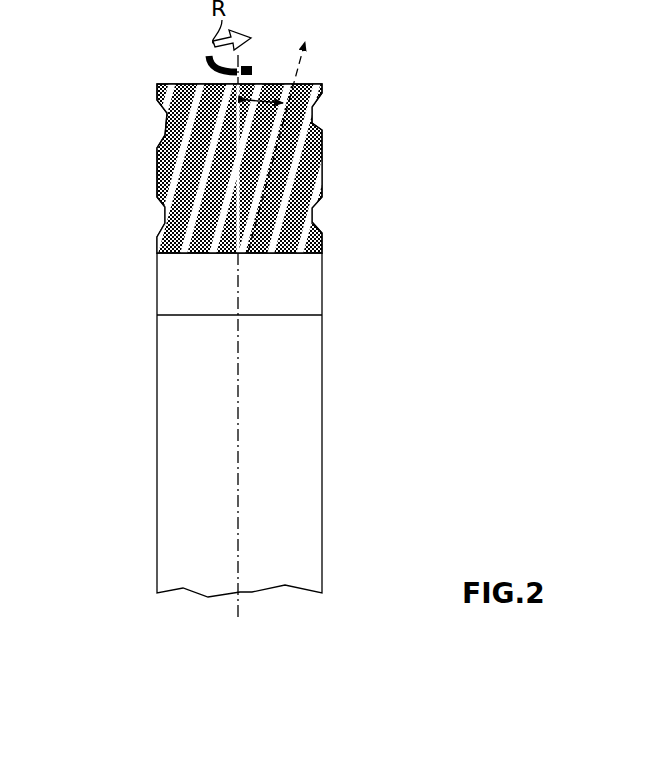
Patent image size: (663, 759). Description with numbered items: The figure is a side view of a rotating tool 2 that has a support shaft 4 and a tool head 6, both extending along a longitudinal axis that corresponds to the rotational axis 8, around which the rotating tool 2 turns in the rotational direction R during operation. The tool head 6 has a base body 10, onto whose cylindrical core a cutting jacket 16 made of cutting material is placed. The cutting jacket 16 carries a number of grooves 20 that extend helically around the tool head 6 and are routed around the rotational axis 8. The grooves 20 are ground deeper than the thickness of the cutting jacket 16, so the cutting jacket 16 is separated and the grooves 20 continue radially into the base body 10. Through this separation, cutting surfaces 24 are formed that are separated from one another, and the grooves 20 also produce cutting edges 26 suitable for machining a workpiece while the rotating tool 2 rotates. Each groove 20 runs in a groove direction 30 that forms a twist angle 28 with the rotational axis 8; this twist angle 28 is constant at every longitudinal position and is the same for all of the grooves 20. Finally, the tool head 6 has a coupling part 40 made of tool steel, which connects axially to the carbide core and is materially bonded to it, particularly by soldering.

The rotating tool 2 is at (429, 122).
The support shaft 4 is at (303, 408).
The tool head 6 is at (326, 158).
The rotational axis 8 is at (240, 458).
The base body 10 is at (323, 285).
The cutting jacket 16 is at (232, 128).
The grooves 20 is at (176, 182).
The cutting surfaces 24 is at (290, 167).
The cutting edges 26 is at (192, 107).
The twist angle 28 is at (260, 98).
The groove direction 30 is at (310, 69).
The coupling part 40 is at (172, 290).